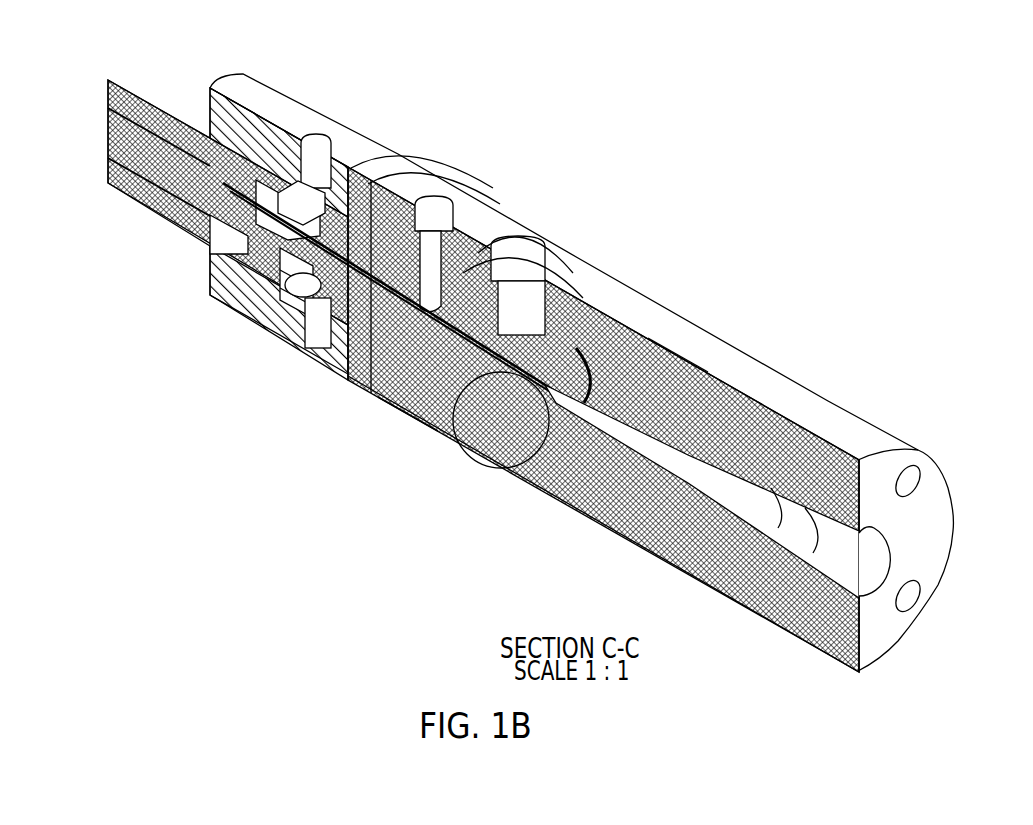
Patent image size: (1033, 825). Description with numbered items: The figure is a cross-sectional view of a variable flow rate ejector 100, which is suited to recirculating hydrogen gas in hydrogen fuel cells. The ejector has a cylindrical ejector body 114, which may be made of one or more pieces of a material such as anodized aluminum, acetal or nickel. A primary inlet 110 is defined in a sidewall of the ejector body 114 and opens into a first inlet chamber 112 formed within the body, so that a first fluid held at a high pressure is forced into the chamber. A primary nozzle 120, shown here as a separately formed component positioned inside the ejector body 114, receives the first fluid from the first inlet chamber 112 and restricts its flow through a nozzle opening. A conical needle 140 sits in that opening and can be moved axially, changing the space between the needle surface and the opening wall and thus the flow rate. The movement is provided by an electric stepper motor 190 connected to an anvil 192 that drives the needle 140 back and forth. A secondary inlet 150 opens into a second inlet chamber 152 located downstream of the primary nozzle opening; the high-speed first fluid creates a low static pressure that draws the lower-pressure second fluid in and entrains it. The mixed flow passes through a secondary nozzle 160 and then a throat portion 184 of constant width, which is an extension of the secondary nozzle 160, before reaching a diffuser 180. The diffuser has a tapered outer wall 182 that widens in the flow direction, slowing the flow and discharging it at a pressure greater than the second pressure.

The variable flow rate ejector 100 is at (910, 72).
The primary inlet 110 is at (428, 212).
The first inlet chamber 112 is at (372, 393).
The ejector body 114 is at (728, 366).
The primary nozzle 120 is at (453, 437).
The needle 140 is at (412, 420).
The secondary inlet 150 is at (527, 263).
The second inlet chamber 152 is at (566, 287).
The secondary nozzle 160 is at (500, 470).
The diffuser 180 is at (763, 397).
The tapered outer wall 182 is at (855, 450).
The throat portion 184 is at (668, 335).
The electric stepper motor 190 is at (160, 209).
The anvil 192 is at (257, 320).